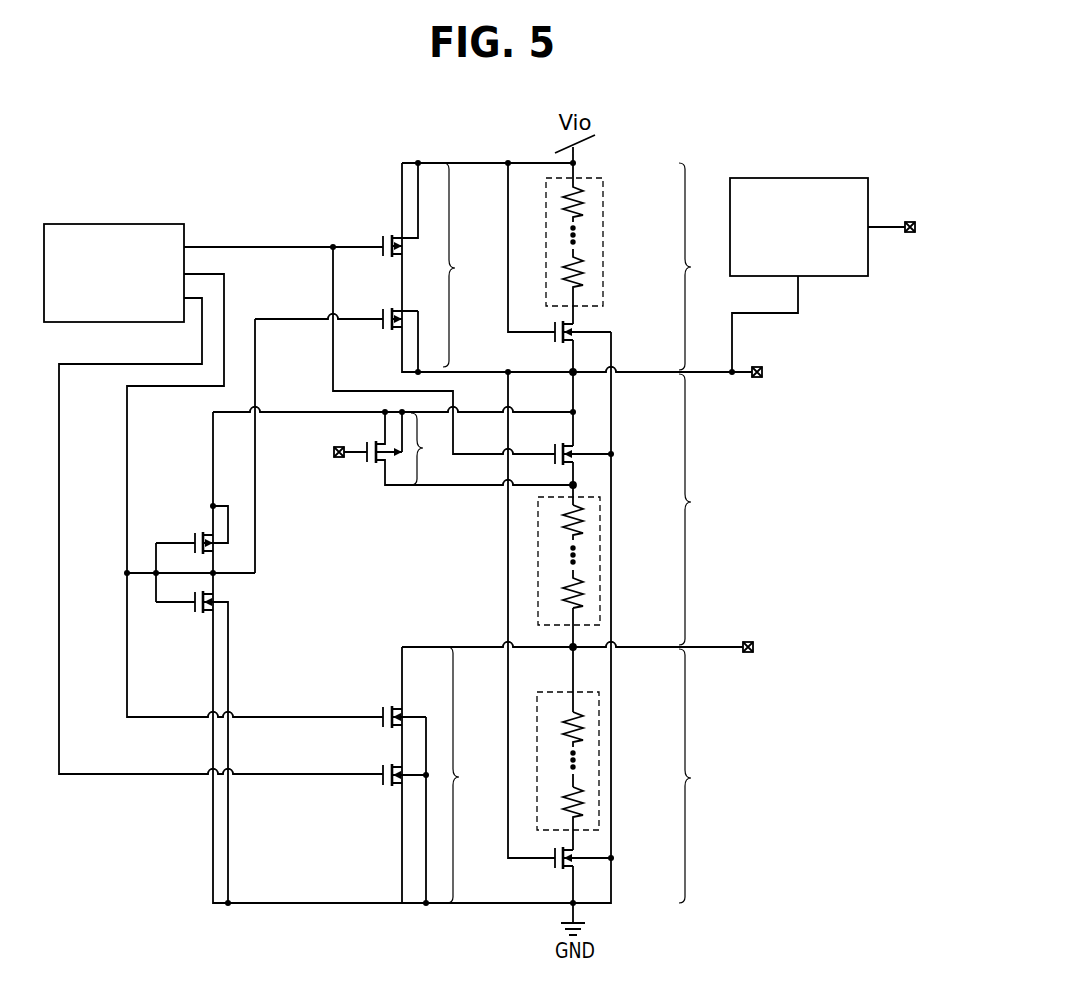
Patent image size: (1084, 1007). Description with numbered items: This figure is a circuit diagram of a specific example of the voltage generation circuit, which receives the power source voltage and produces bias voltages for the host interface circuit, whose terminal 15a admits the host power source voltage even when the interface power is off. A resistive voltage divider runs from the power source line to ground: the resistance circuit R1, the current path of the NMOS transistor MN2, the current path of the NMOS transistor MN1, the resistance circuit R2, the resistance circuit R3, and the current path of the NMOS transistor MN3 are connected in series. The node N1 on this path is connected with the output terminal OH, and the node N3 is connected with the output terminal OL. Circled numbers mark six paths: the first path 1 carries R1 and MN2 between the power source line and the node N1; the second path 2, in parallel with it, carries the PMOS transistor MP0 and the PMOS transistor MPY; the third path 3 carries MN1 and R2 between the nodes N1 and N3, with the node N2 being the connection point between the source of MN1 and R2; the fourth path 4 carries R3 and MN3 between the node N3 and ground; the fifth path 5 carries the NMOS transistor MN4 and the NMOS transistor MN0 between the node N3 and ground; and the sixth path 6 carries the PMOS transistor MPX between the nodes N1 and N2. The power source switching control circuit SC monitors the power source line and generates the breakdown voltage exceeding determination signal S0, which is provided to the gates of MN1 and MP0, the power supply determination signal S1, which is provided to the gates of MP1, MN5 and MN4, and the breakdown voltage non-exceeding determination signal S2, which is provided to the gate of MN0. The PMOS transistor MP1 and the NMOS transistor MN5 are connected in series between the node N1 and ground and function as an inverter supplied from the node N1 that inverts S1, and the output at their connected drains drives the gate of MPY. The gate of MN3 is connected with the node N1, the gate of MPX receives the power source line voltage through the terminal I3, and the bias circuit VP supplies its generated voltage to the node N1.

The first path 1 is at (699, 266).
The second path 2 is at (463, 265).
The third path 3 is at (699, 509).
The fourth path 4 is at (699, 776).
The fifth path 5 is at (466, 775).
The sixth path 6 is at (428, 449).
The terminal 15a is at (910, 233).
The power source switching control circuit SC is at (116, 223).
The breakdown voltage exceeding determination signal S0 is at (283, 234).
The power supply determination signal S1 is at (170, 572).
The breakdown voltage non-exceeding determination signal S2 is at (221, 554).
The PMOS transistor MP0 is at (386, 235).
The PMOS transistor MPY is at (383, 305).
The PMOS transistor MPX is at (455, 448).
The PMOS transistor MP1 is at (192, 530).
The NMOS transistor MN5 is at (192, 747).
The NMOS transistor MN4 is at (390, 704).
The NMOS transistor MN0 is at (390, 762).
The NMOS transistor MN2 is at (568, 346).
The NMOS transistor MN1 is at (568, 441).
The NMOS transistor MN3 is at (569, 870).
The resistance circuit R1 is at (604, 240).
The resistance circuit R2 is at (601, 553).
The resistance circuit R3 is at (600, 727).
The node N1 is at (578, 376).
The node N2 is at (578, 486).
The node N3 is at (576, 650).
The terminal I3 is at (339, 458).
The bias circuit VP is at (798, 177).
The output terminal OH is at (760, 365).
The output terminal OL is at (752, 640).